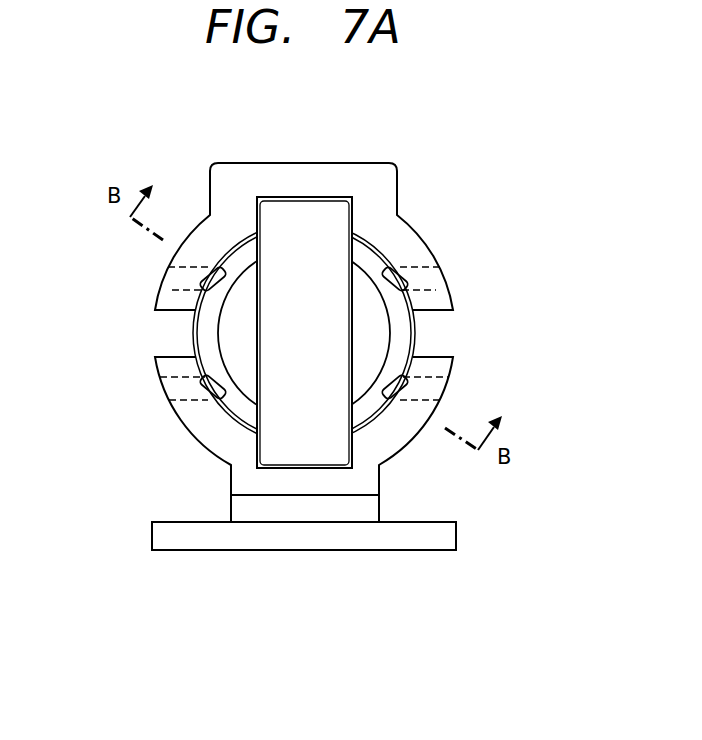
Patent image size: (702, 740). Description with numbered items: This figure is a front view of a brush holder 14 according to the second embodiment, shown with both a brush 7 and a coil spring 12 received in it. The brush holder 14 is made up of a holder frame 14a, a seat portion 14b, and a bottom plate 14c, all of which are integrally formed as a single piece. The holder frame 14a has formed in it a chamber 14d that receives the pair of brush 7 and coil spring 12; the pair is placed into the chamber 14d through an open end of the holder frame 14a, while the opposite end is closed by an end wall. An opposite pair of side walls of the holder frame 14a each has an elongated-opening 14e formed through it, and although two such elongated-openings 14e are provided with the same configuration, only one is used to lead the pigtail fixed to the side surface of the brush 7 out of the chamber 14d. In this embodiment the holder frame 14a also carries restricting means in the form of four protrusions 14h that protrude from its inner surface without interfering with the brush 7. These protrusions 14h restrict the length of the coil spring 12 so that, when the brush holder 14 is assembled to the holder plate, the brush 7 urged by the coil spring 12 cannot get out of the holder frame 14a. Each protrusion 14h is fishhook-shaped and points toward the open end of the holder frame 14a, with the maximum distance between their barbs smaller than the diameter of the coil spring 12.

The brush 7 is at (310, 220).
The coil spring 12 is at (243, 402).
The brush holder 14 is at (190, 152).
The holder frame 14a is at (398, 238).
The seat portion 14b is at (326, 512).
The bottom plate 14c is at (202, 533).
The chamber 14d is at (242, 342).
The elongated-opening 14e is at (432, 338).
The protrusion 14h is at (393, 276).